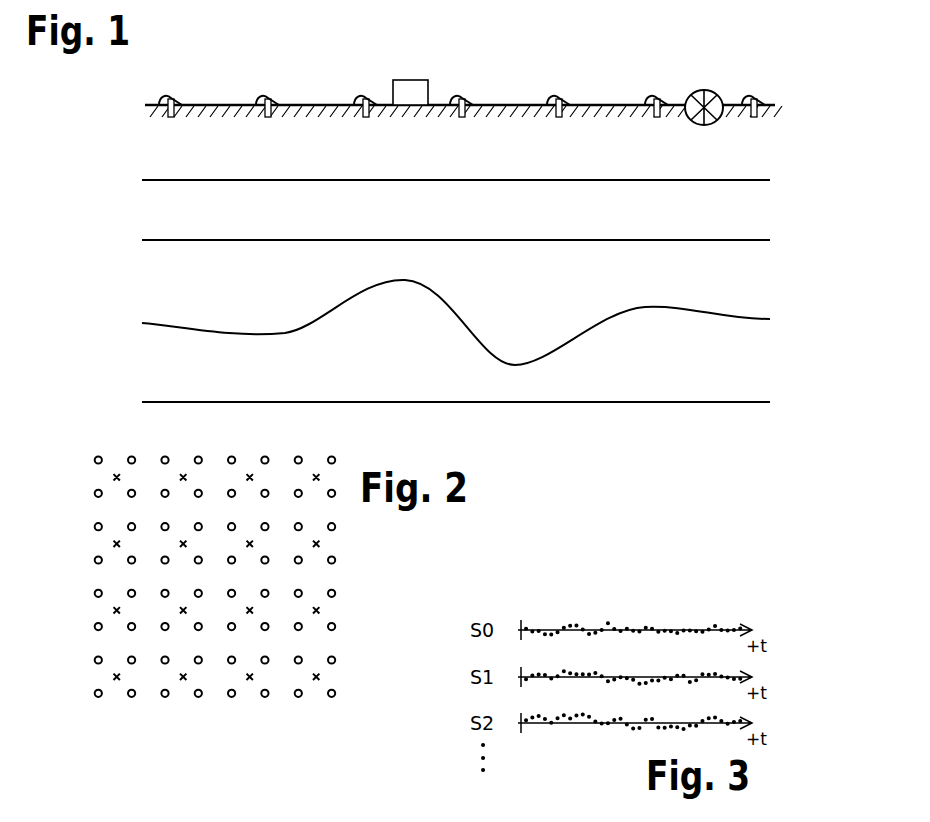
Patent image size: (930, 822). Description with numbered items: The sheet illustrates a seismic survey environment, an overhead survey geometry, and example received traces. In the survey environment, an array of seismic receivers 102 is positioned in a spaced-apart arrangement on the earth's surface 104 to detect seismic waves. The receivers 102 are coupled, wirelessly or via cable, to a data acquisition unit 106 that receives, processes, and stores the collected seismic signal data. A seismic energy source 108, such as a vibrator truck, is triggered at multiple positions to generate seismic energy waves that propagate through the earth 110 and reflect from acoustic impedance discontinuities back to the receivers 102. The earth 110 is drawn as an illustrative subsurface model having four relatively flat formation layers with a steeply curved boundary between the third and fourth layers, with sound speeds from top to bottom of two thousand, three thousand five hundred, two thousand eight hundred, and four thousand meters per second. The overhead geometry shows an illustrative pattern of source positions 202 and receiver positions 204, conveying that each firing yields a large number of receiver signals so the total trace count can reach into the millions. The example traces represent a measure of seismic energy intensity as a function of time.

In FIG. 1, the seismic receivers 102 is at (260, 98).
In FIG. 1, the earth's surface 104 is at (159, 105).
In FIG. 1, the data acquisition unit 106 is at (412, 82).
In FIG. 1, the seismic energy source 108 is at (709, 93).
In FIG. 1, the earth 110 is at (780, 132).
In FIG. 2, the source positions 202 is at (116, 543).
In FIG. 2, the receiver positions 204 is at (98, 593).